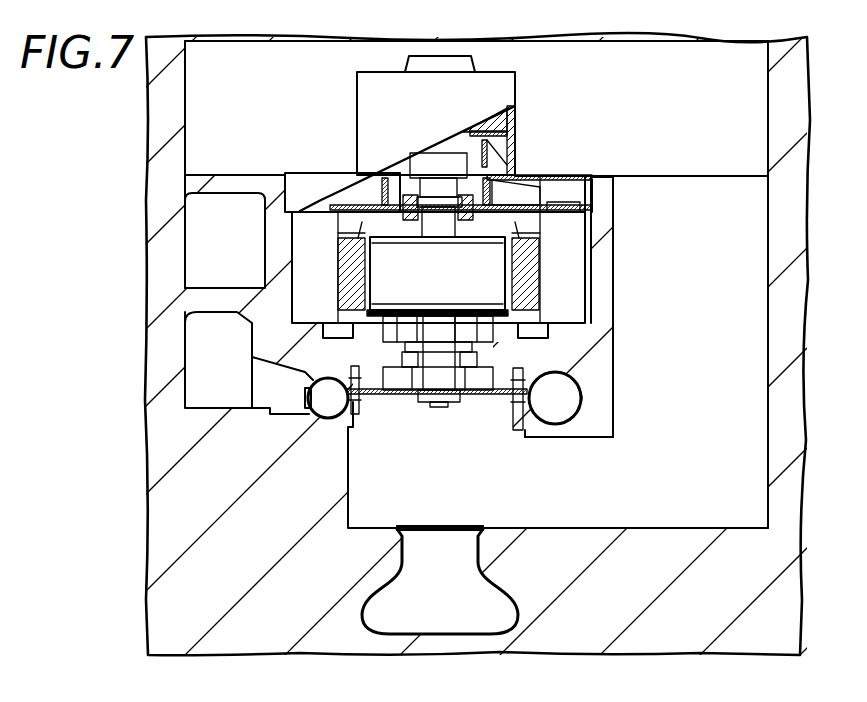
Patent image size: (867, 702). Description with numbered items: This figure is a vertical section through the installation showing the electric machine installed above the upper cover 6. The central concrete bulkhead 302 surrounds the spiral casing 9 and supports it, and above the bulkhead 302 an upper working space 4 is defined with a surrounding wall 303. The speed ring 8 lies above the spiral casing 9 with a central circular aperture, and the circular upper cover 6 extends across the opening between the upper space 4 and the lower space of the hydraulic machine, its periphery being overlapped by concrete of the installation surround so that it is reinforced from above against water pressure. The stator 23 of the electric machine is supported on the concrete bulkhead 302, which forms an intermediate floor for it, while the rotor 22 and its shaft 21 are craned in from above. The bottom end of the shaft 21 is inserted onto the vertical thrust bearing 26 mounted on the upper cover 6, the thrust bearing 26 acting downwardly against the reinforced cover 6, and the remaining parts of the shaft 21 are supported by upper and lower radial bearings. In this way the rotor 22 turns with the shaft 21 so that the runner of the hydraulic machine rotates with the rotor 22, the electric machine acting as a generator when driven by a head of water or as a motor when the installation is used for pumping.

The upper space 4 is at (560, 272).
The shaft 21 is at (378, 210).
The rotor 22 is at (483, 253).
The stator 23 is at (560, 299).
The vertical thrust bearing 26 is at (482, 392).
The upper cover 6 is at (398, 392).
The speed ring 8 is at (548, 422).
The spiral casing 9 is at (588, 410).
The central concrete bulkhead 302 is at (585, 348).
The surrounding wall 303 is at (596, 219).